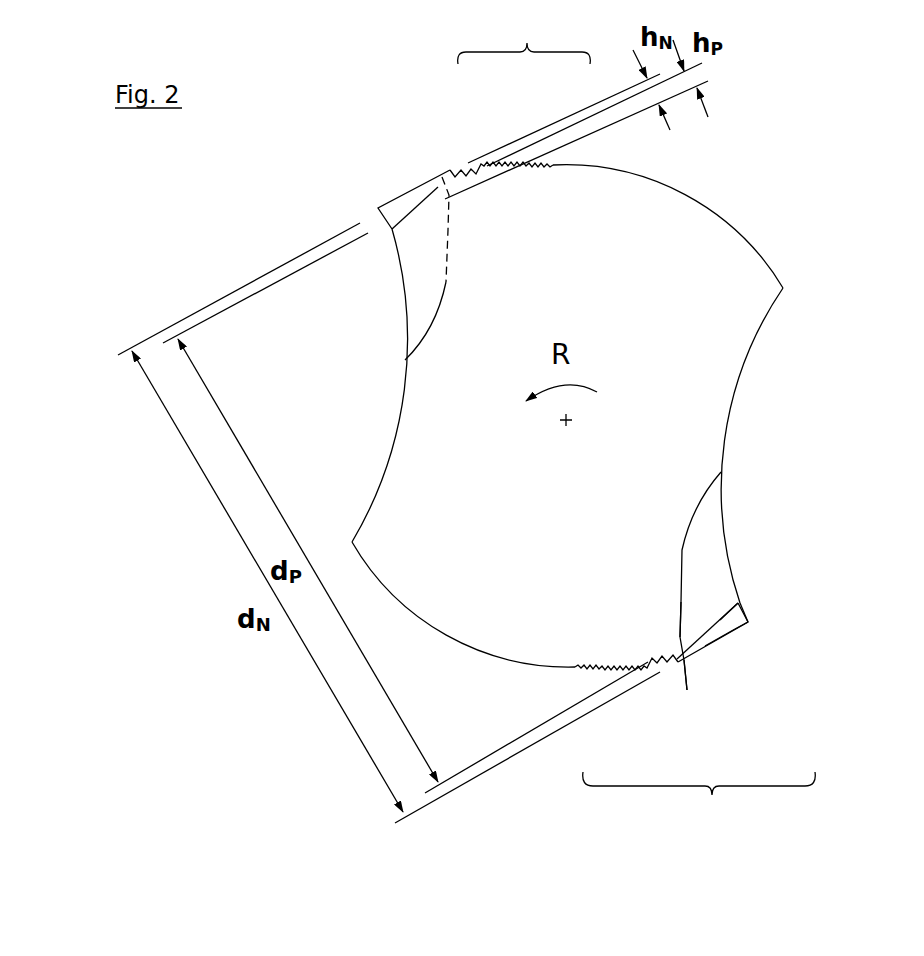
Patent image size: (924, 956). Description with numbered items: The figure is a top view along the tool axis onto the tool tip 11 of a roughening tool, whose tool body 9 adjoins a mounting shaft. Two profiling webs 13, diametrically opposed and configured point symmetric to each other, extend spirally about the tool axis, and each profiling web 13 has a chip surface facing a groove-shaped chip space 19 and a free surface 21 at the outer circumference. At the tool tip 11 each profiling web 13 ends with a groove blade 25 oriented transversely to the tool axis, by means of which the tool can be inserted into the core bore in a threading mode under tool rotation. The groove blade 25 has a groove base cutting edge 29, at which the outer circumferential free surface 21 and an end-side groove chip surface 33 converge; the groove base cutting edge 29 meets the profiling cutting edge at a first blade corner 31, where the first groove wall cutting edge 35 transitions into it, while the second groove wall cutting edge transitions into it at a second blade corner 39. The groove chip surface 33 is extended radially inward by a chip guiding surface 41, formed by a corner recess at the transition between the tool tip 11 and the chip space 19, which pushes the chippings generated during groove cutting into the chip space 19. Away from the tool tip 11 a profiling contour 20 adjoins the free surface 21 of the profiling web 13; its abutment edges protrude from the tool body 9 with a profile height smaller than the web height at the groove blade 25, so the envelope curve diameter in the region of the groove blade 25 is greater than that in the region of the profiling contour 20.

The tool body 9 is at (680, 197).
The tool tip 11 is at (656, 276).
The profiling web 13 is at (637, 425).
The chip space 19 is at (398, 404).
The profiling contour 20 is at (503, 156).
The free surface 21 is at (688, 692).
The groove blade 25 is at (416, 178).
The groove base cutting edge 29 is at (749, 630).
The first blade corner 31 is at (750, 622).
The groove chip surface 33 is at (727, 628).
The first groove wall cutting edge 35 is at (742, 604).
The second blade corner 39 is at (676, 624).
The chip guiding surface 41 is at (427, 283).